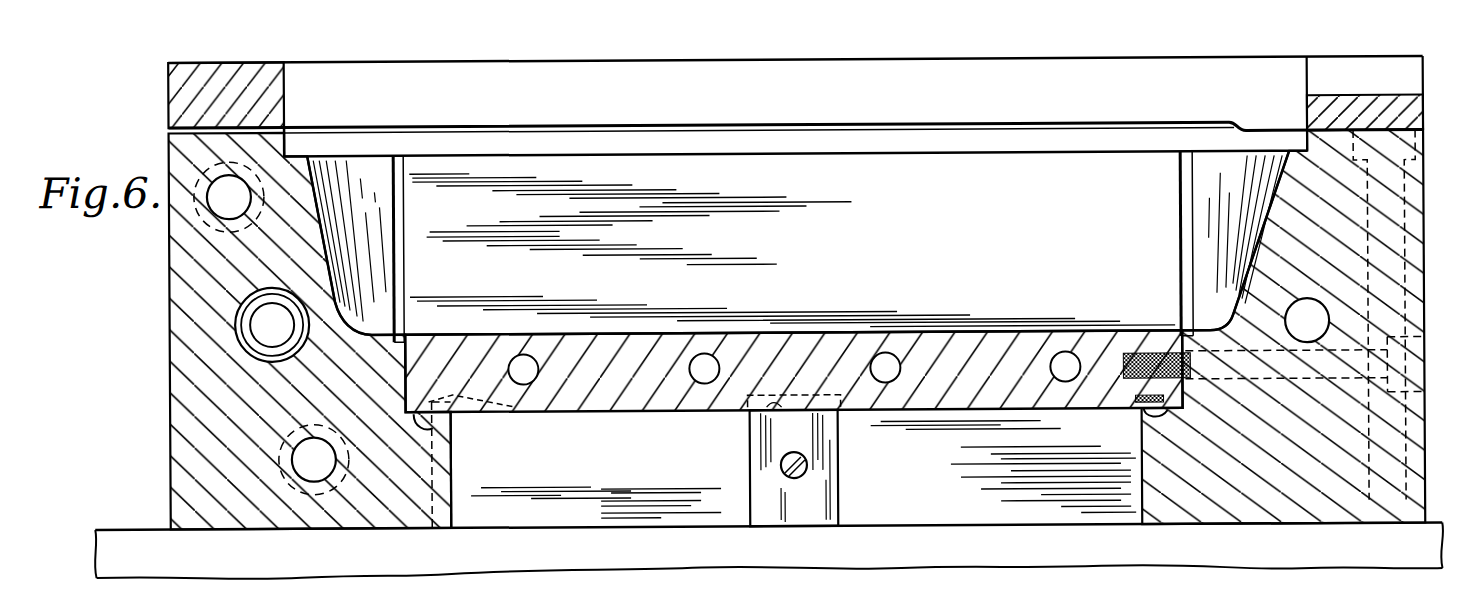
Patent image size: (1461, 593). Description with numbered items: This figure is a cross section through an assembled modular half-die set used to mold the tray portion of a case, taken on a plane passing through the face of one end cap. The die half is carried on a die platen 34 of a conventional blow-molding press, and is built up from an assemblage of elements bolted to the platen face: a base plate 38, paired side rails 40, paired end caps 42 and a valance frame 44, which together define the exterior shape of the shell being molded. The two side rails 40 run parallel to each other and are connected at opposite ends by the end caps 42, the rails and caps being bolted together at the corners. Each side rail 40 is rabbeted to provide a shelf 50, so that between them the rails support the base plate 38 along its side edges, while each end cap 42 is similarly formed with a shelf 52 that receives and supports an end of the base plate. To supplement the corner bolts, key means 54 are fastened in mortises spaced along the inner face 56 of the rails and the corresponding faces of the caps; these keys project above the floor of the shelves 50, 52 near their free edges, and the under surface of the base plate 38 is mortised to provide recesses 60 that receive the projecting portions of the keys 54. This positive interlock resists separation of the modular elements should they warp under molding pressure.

The die platen 34 is at (987, 557).
The base plate 38 is at (637, 396).
The side rail 40 is at (190, 337).
The end cap 42 is at (846, 246).
The valance frame 44 is at (266, 69).
The shelf 50 is at (450, 430).
The shelf 52 is at (784, 418).
The key means 54 is at (819, 460).
The inner face 56 is at (452, 500).
The recess 60 is at (518, 408).